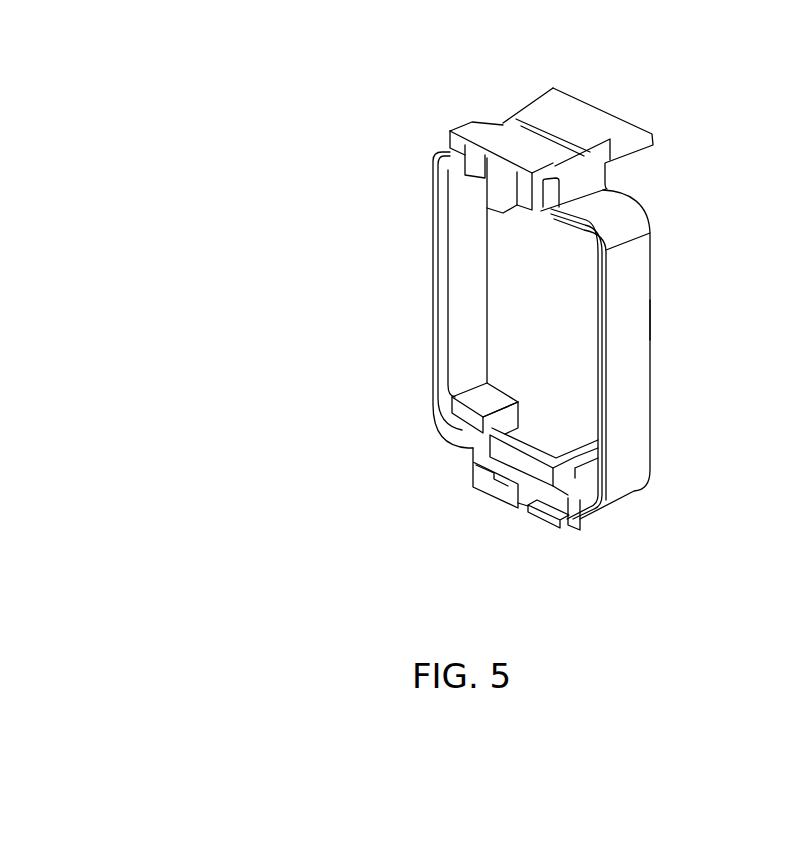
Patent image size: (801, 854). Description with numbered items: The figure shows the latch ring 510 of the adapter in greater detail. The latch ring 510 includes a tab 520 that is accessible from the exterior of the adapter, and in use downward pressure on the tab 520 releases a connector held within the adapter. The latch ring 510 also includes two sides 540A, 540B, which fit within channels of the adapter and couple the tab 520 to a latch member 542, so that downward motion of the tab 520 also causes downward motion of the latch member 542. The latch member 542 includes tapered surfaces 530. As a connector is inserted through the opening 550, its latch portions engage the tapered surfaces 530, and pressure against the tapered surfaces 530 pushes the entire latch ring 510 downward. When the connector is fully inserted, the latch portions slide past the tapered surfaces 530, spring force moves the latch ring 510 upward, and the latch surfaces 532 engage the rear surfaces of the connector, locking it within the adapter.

The latch ring 510 is at (648, 532).
The tab 520 is at (645, 126).
The tapered surfaces 530 is at (530, 430).
The latch surfaces 532 is at (479, 443).
The side 540A is at (636, 336).
The side 540B is at (433, 247).
The latch member 542 is at (457, 430).
The opening 550 is at (523, 327).